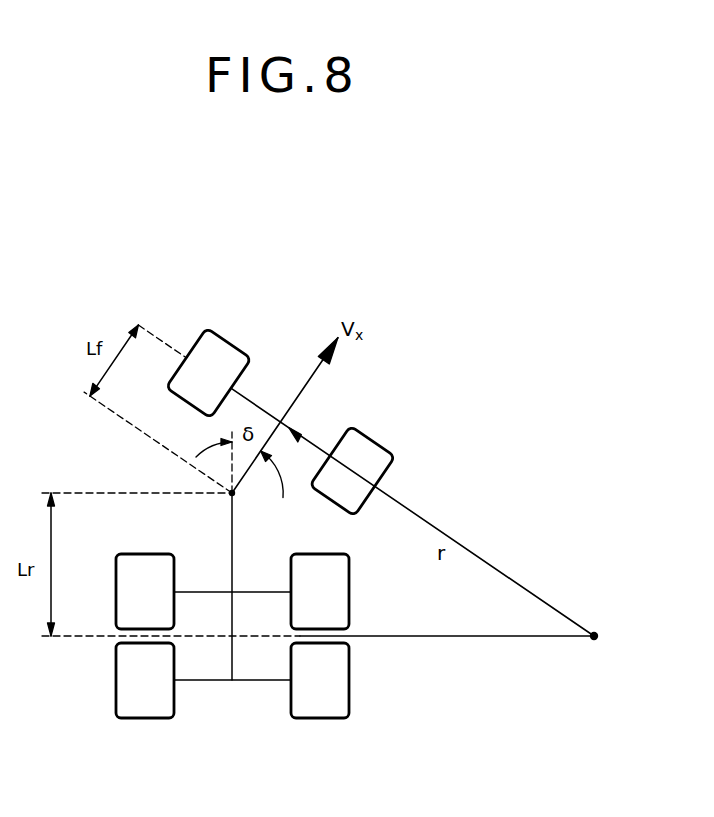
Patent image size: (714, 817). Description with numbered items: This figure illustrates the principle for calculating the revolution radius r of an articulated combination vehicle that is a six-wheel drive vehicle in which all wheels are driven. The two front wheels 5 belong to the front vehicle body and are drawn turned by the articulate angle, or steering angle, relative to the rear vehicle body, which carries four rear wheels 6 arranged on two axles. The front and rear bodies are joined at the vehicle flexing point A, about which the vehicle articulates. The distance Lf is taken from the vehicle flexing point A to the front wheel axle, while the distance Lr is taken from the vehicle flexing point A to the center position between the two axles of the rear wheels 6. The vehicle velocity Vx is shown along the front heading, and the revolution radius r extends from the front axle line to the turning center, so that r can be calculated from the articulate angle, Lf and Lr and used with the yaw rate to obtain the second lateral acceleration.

The front wheels 5 is at (232, 340).
The rear wheels 6 is at (118, 608).
The vehicle flexing point A is at (233, 495).